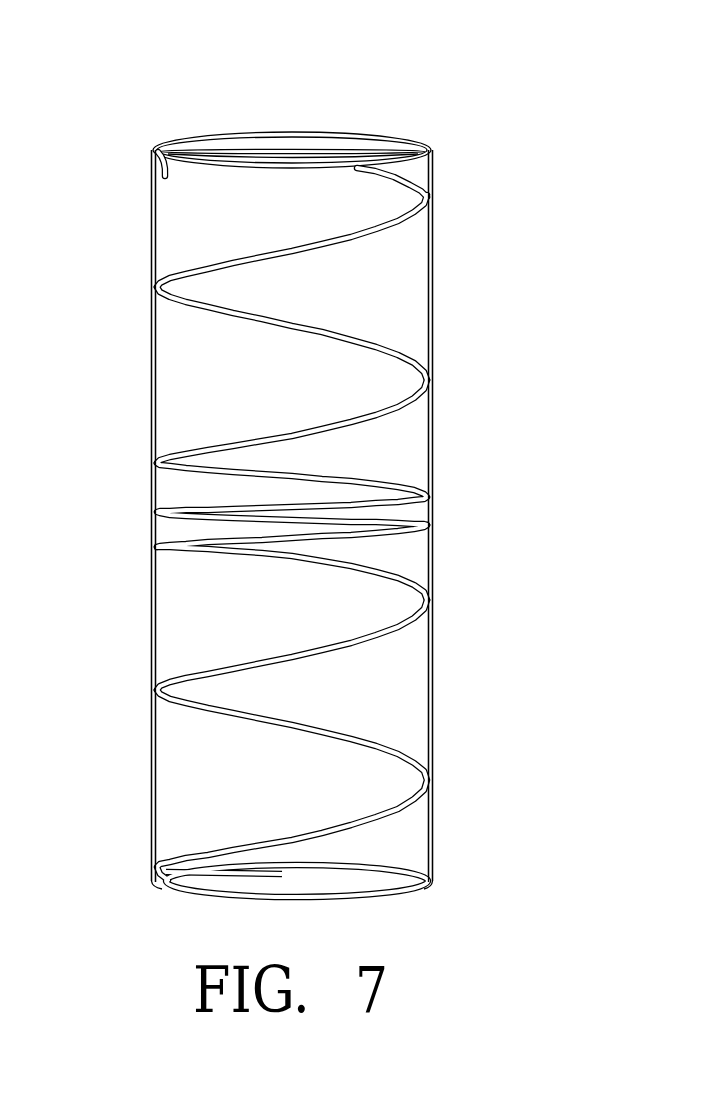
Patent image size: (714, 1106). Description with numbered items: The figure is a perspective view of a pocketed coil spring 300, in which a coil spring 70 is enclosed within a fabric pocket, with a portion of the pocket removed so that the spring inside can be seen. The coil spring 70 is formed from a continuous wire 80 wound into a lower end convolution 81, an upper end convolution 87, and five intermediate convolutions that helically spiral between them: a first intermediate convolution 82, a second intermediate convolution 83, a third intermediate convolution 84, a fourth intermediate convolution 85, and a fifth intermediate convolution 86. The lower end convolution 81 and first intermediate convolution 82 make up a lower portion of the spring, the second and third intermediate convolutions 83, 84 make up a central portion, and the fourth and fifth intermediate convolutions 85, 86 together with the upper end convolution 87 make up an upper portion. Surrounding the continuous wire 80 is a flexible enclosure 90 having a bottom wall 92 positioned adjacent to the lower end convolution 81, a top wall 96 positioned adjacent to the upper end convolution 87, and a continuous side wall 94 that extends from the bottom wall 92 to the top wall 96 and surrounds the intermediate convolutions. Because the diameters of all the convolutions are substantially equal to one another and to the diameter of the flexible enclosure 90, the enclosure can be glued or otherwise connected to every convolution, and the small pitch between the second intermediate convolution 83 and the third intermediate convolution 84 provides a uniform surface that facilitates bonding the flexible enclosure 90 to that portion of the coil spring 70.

The pocketed coil spring 300 is at (148, 76).
The top wall 96 is at (327, 142).
The coil spring 70 is at (432, 178).
The upper end convolution 87 is at (163, 176).
The flexible enclosure 90 is at (435, 248).
The continuous side wall 94 is at (436, 437).
The fifth intermediate convolution 86 is at (178, 275).
The fourth intermediate convolution 85 is at (170, 453).
The third intermediate convolution 84 is at (167, 510).
The second intermediate convolution 83 is at (168, 551).
The continuous wire 80 is at (430, 598).
The first intermediate convolution 82 is at (172, 683).
The lower end convolution 81 is at (170, 896).
The bottom wall 92 is at (420, 895).